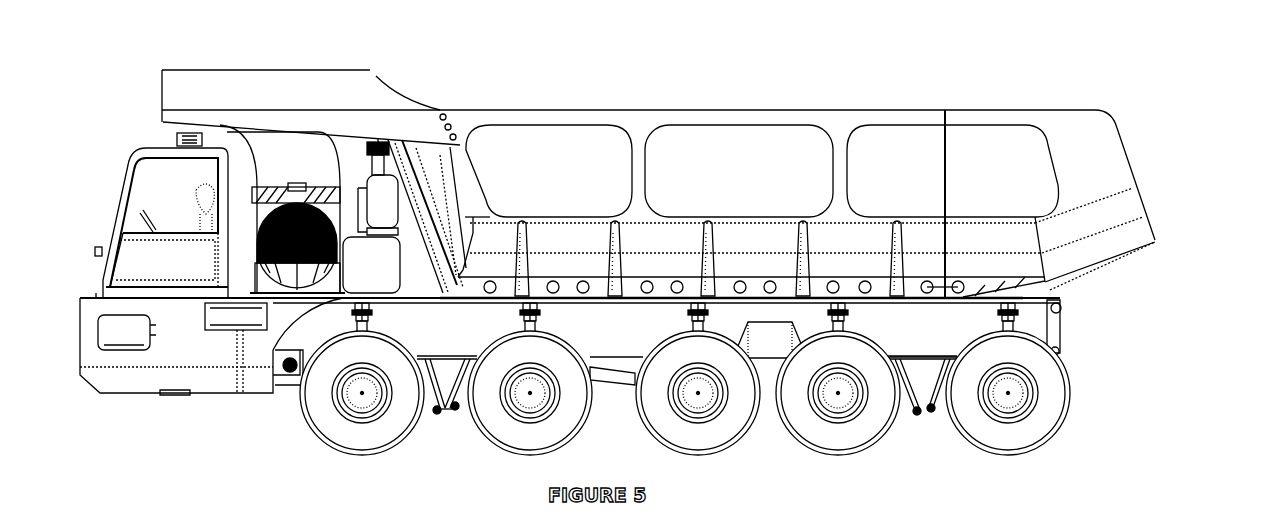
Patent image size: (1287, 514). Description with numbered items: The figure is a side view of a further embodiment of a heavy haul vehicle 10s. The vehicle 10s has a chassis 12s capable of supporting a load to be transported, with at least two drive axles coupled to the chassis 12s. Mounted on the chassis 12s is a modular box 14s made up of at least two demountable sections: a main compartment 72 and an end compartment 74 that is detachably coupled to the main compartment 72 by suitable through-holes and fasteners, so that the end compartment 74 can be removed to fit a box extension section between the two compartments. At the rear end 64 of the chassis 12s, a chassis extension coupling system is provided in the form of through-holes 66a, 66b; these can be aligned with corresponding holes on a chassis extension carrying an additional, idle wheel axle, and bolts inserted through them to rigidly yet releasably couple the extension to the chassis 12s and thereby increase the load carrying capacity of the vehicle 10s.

The heavy haul vehicle 10s is at (1178, 157).
The chassis 12s is at (327, 320).
The modular box 14s is at (947, 78).
The main compartment 72 is at (808, 110).
The end compartment 74 is at (1033, 108).
The through-hole 66a is at (1062, 310).
The through-hole 66b is at (1062, 357).
The rear end 64 is at (1097, 415).